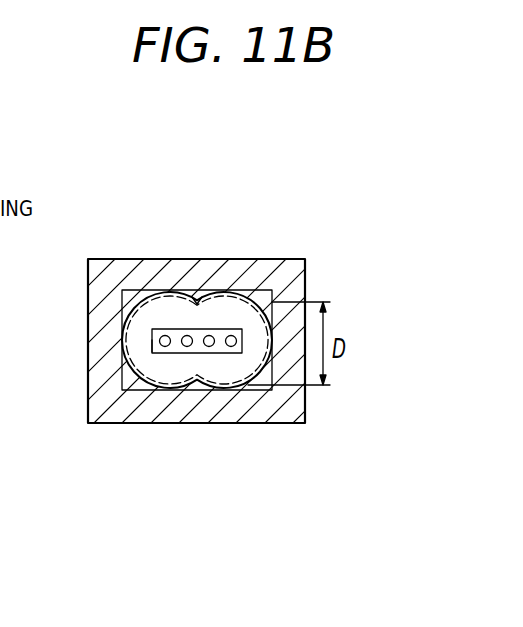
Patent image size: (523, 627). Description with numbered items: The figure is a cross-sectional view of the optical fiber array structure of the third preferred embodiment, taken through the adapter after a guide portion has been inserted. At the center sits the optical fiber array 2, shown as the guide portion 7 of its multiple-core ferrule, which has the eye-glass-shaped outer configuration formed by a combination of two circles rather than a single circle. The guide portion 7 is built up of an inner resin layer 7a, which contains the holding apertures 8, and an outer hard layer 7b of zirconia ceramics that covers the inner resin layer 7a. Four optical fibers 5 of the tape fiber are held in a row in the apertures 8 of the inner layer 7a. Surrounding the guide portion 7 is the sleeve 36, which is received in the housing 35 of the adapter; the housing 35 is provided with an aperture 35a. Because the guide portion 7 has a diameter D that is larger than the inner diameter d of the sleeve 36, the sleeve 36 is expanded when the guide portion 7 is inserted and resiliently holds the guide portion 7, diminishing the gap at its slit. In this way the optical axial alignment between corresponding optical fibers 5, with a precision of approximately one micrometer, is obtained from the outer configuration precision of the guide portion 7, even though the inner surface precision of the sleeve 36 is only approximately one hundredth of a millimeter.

The optical fiber array 2 is at (281, 468).
The optical fiber 5 is at (234, 348).
The guide portion 7 is at (163, 365).
The inner resin layer 7a is at (244, 338).
The outer hard layer 7b is at (259, 306).
The aperture 8 is at (152, 346).
The housing 35 is at (236, 312).
The aperture 35a is at (196, 298).
The sleeve 36 is at (291, 383).